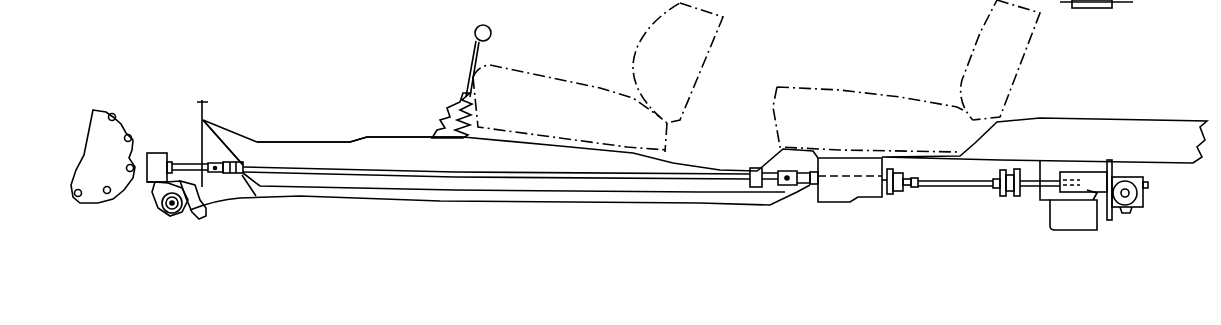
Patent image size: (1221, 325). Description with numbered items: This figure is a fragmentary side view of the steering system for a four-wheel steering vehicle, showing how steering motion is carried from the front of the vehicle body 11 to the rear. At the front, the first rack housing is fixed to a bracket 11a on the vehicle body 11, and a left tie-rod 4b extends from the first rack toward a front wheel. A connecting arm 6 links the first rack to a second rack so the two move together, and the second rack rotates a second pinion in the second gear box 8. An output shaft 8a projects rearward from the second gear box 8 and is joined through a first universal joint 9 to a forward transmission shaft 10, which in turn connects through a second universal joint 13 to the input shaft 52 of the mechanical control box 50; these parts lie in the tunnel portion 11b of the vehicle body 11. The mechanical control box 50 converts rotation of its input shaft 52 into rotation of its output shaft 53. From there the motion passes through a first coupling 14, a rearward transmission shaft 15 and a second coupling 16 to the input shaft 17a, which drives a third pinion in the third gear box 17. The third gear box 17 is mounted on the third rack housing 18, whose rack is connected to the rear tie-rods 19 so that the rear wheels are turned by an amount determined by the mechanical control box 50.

The left tie-rod 4b is at (210, 6).
The connecting arm 6 is at (165, 190).
The second gear box 8 is at (160, 153).
The output shaft 8a is at (189, 162).
The first universal joint 9 is at (243, 152).
The forward transmission shaft 10 is at (438, 177).
The vehicle body 11 is at (402, 138).
The bracket 11a is at (203, 214).
The tunnel portion 11b is at (305, 158).
The second universal joint 13 is at (790, 188).
The first coupling 14 is at (906, 200).
The rearward transmission shaft 15 is at (953, 186).
The second coupling 16 is at (1006, 199).
The third gear box 17 is at (1143, 173).
The input shaft 17a is at (1032, 188).
The third rack housing 18 is at (1133, 200).
The rear tie-rods 19 is at (1180, 6).
The mechanical control box 50 is at (857, 196).
The input shaft 52 is at (815, 190).
The output shaft 53 is at (888, 195).